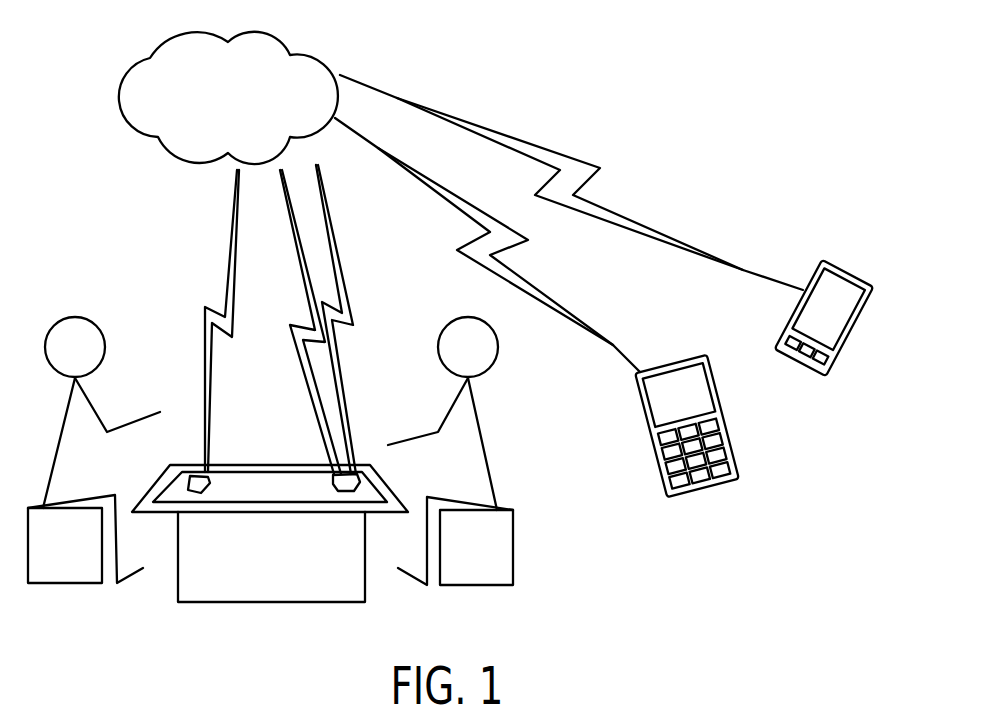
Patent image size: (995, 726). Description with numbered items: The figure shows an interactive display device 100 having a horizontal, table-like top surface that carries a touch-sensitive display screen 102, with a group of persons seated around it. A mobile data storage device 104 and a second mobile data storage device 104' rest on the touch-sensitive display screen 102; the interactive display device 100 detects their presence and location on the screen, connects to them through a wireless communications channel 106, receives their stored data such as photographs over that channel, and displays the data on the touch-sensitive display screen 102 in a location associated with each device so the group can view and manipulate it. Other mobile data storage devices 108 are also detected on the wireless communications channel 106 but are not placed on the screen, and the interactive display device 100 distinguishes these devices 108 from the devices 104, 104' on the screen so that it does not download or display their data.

The interactive display device 100 is at (256, 570).
The touch-sensitive display screen 102 is at (212, 512).
The mobile data storage device 104 is at (168, 474).
The mobile data storage device 104' is at (378, 473).
The wireless communications channel 106 is at (212, 108).
The mobile data storage device 108 is at (845, 267).